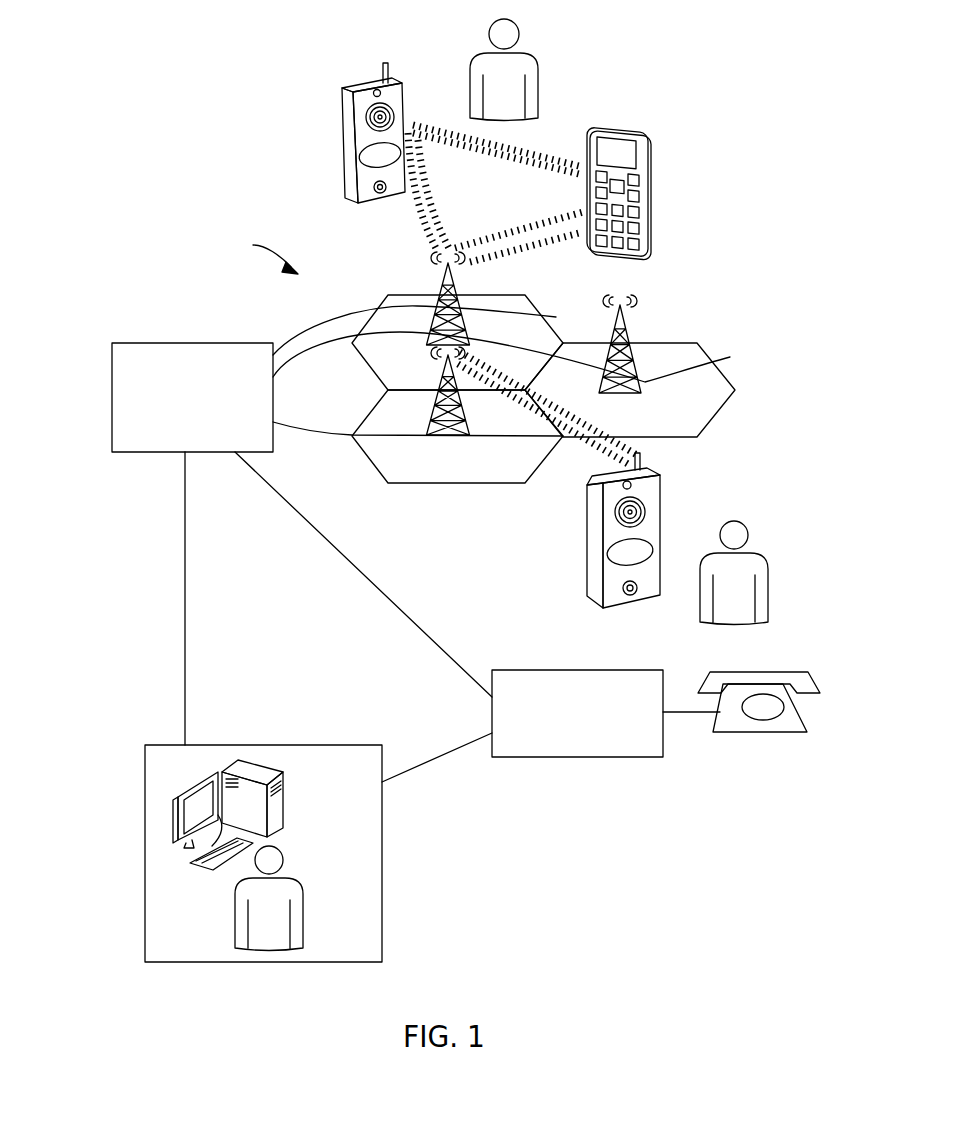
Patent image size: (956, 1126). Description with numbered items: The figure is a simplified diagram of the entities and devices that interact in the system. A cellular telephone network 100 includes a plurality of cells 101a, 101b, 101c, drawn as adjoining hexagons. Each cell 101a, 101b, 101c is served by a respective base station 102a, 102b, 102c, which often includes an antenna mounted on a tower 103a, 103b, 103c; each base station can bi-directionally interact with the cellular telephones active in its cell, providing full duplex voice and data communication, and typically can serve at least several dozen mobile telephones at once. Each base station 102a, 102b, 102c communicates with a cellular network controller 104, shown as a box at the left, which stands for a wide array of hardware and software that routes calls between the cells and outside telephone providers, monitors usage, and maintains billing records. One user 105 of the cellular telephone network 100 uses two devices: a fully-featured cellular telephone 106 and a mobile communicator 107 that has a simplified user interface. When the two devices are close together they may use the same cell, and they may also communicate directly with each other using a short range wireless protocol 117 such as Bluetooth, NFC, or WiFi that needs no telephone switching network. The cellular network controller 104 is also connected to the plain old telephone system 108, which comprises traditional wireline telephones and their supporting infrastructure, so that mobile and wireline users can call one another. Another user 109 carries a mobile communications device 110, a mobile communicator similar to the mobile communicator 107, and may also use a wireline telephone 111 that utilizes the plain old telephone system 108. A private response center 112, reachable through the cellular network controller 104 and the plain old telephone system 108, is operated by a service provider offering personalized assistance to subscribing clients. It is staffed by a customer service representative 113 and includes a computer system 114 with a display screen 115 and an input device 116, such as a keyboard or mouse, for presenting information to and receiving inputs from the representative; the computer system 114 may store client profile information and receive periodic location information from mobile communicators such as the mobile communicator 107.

The cellular telephone network 100 is at (254, 253).
The cell 101a is at (396, 305).
The cell 101b is at (688, 423).
The cell 101c is at (390, 457).
The base station 102a is at (439, 328).
The base station 102b is at (526, 357).
The base station 102c is at (452, 440).
The tower 103a is at (438, 292).
The tower 103b is at (640, 354).
The tower 103c is at (472, 404).
The cellular network controller 104 is at (121, 350).
The user 105 is at (535, 55).
The cellular telephone 106 is at (650, 168).
The mobile communicator 107 is at (347, 115).
The plain old telephone system 108 is at (557, 750).
The user 109 is at (758, 563).
The mobile communications device 110 is at (592, 578).
The wireline telephone 111 is at (755, 725).
The private response center 112 is at (152, 749).
The customer service representative 113 is at (306, 905).
The computer system 114 is at (262, 772).
The display screen 115 is at (187, 815).
The input device 116 is at (195, 862).
The short range wireless protocol 117 is at (492, 158).